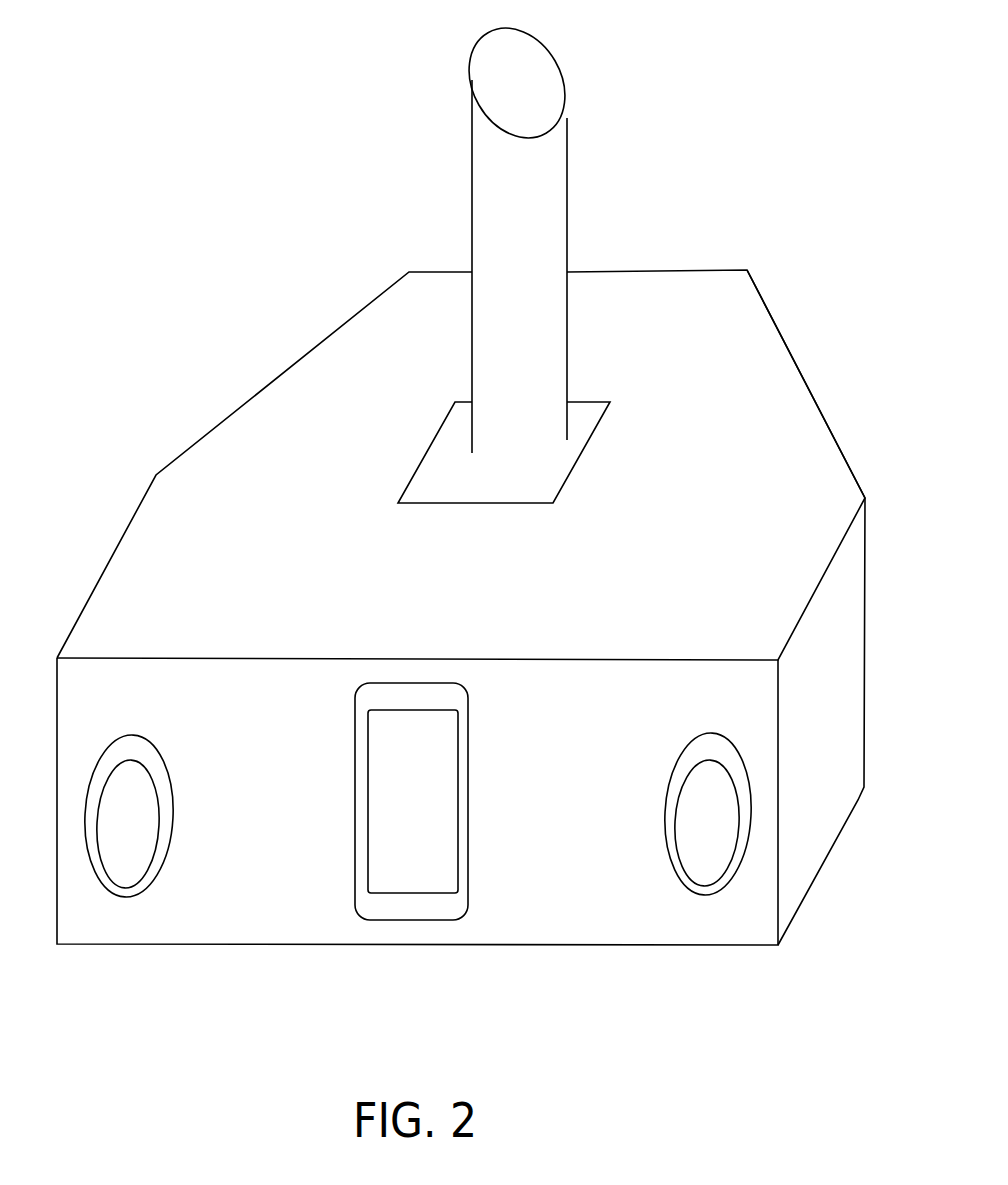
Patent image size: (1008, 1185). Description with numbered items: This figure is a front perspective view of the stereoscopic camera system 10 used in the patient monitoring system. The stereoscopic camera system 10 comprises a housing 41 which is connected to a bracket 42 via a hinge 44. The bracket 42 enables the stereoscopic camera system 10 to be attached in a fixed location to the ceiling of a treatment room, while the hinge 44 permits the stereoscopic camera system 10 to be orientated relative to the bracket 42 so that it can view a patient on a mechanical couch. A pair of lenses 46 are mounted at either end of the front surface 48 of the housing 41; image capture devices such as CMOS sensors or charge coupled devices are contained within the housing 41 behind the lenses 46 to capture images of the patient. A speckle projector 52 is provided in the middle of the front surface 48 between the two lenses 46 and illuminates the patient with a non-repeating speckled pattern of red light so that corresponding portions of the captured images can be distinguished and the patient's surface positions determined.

The stereoscopic camera system 10 is at (291, 256).
The housing 41 is at (797, 467).
The bracket 42 is at (556, 180).
The hinge 44 is at (583, 430).
The lenses 46 is at (165, 793).
The front surface 48 is at (583, 946).
The speckle projector 52 is at (447, 798).